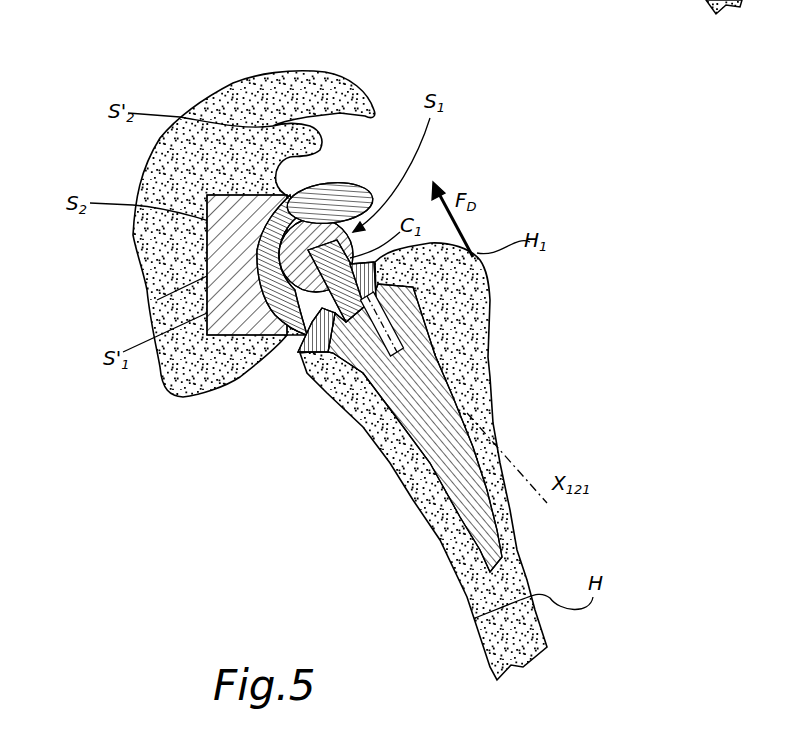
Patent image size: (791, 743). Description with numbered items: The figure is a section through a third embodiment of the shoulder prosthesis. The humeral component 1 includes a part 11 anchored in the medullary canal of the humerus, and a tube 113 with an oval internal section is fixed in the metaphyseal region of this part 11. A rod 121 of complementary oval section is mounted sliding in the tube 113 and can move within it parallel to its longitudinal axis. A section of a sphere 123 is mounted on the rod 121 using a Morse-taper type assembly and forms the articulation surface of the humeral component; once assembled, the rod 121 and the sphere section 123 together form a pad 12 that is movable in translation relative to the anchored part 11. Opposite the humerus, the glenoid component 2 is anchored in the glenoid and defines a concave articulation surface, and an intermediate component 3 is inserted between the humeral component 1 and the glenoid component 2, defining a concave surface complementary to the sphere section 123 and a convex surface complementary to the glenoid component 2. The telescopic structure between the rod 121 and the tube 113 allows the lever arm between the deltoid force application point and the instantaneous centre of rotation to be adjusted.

The humeral component 1 is at (413, 460).
The glenoid component 2 is at (157, 300).
The intermediate component 3 is at (360, 183).
The part 11 is at (478, 490).
The pad 12 is at (278, 383).
The tube 113 is at (397, 318).
The rod 121 is at (340, 400).
The section of a sphere 123 is at (298, 352).